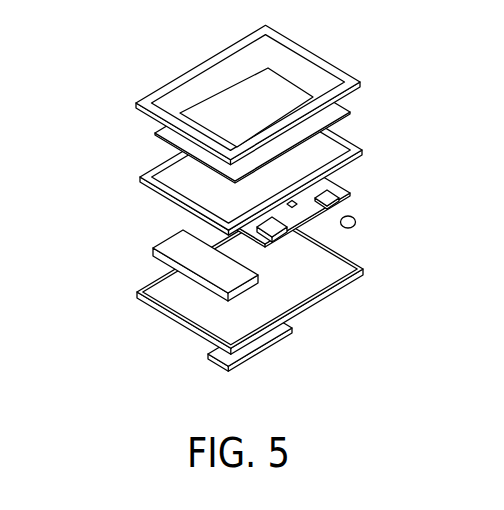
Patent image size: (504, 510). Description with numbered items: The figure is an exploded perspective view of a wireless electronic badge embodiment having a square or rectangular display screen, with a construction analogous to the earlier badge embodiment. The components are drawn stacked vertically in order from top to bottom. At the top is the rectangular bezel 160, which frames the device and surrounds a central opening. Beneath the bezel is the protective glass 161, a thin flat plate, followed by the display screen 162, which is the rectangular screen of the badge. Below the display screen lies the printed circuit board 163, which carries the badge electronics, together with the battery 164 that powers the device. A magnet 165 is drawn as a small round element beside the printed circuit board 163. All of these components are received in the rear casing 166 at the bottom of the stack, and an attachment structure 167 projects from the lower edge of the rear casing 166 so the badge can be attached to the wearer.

The rectangular bezel 160 is at (361, 83).
The protective glass 161 is at (155, 133).
The display screen 162 is at (139, 178).
The printed circuit board 163 is at (348, 193).
The battery 164 is at (153, 249).
The magnet 165 is at (357, 227).
The rear casing 166 is at (197, 320).
The attachment structure 167 is at (265, 353).